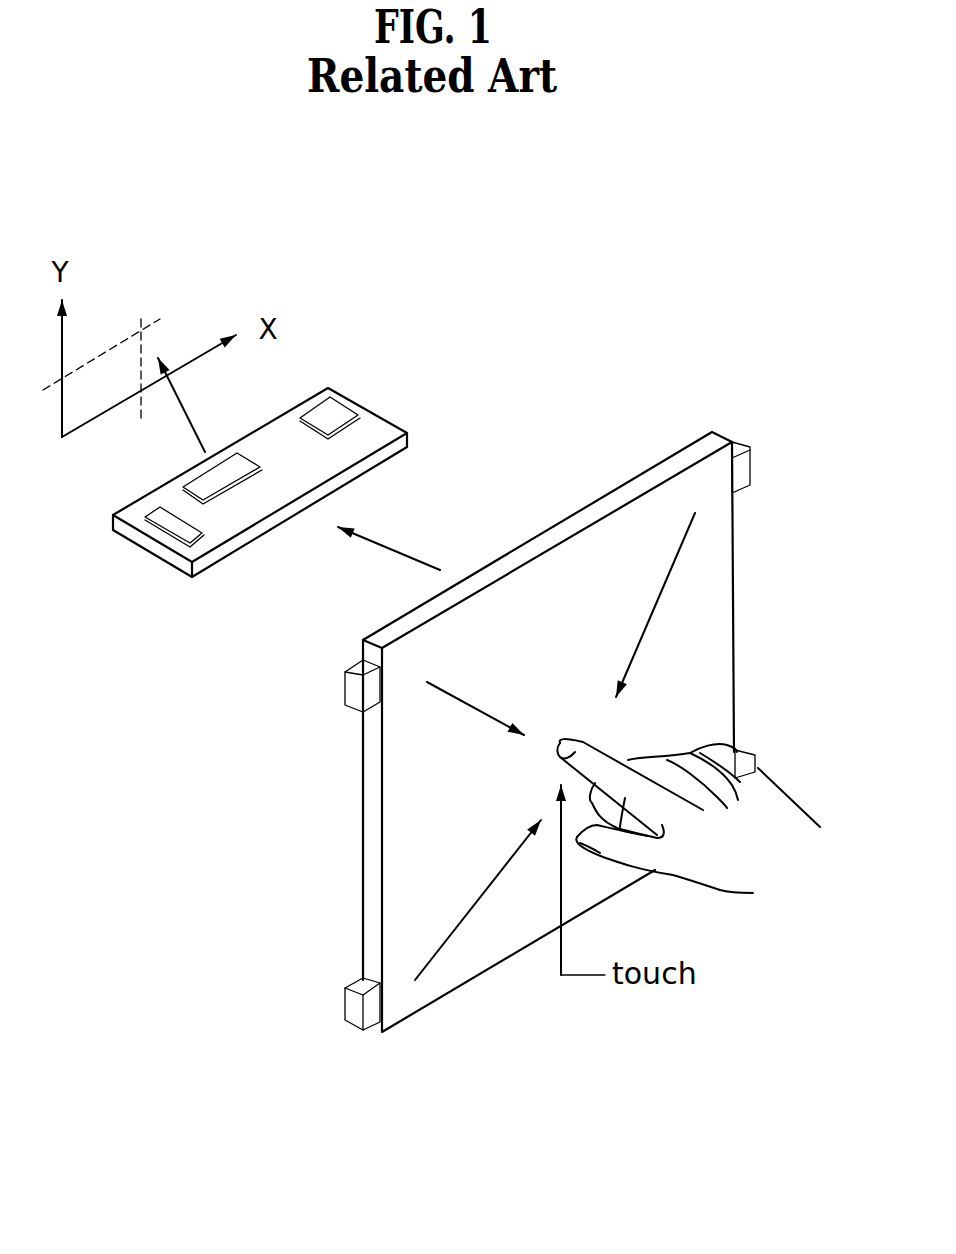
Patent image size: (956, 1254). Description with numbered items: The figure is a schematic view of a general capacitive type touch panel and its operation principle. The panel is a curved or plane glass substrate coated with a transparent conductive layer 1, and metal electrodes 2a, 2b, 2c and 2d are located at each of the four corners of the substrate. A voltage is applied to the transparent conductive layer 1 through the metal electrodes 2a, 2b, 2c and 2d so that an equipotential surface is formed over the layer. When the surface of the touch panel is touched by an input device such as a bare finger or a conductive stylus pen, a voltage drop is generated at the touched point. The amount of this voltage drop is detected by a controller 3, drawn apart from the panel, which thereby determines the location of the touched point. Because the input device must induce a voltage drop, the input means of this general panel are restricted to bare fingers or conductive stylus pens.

The transparent conductive layer 1 is at (712, 642).
The metal electrode 2a is at (370, 690).
The metal electrode 2b is at (370, 1005).
The metal electrode 2c is at (757, 762).
The metal electrode 2d is at (740, 472).
The controller 3 is at (367, 432).